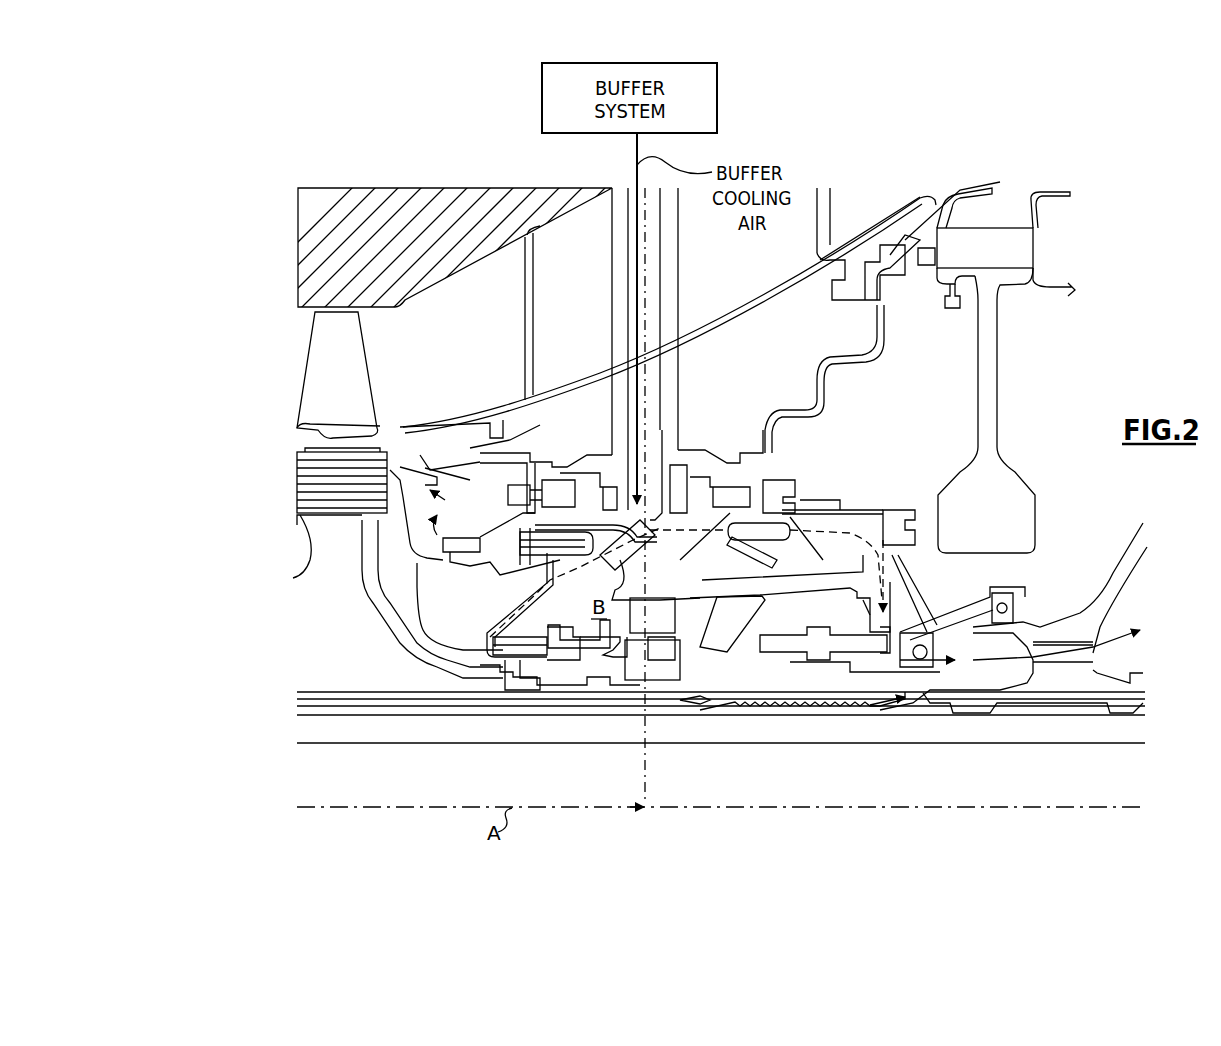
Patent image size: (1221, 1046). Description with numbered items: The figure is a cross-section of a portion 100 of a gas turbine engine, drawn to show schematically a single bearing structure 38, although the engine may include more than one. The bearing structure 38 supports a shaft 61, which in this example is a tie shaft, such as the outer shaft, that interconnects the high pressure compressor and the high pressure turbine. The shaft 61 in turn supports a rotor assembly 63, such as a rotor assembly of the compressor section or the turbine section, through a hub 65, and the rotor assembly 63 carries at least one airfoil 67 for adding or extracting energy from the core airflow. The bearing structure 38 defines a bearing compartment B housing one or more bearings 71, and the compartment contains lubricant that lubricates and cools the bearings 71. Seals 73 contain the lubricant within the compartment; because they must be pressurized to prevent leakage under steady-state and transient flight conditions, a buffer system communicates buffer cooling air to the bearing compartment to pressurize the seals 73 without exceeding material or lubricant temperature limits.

The portion of a gas turbine engine 100 is at (866, 124).
The bearing structure 38 is at (775, 590).
The shaft 61 is at (713, 702).
The rotor assembly 63 is at (315, 590).
The hub 65 is at (530, 682).
The airfoil 67 is at (350, 372).
The bearings 71 is at (657, 648).
The seals 73 is at (563, 643).